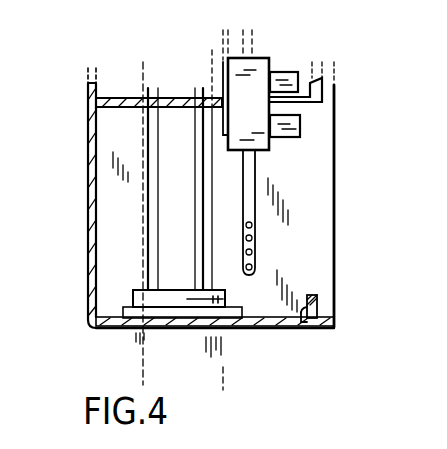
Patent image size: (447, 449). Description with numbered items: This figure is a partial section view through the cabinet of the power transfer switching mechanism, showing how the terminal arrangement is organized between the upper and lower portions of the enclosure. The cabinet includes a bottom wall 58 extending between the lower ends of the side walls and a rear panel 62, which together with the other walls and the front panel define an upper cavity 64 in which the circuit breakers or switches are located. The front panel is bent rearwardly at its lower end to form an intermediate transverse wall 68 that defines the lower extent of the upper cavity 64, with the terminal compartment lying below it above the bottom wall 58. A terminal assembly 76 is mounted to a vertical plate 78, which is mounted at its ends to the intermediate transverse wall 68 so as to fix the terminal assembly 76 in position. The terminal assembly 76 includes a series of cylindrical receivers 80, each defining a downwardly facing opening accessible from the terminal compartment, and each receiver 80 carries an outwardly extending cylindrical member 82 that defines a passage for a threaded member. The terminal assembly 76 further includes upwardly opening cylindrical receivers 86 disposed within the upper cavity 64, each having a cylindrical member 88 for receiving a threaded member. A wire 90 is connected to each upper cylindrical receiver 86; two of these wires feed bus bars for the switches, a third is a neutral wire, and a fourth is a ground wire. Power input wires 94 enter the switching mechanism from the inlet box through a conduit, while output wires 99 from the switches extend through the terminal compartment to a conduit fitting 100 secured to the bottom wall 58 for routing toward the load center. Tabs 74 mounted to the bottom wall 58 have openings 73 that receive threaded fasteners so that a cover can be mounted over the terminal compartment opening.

The bottom wall 58 is at (247, 329).
The rear panel 62 is at (88, 201).
The upper cavity 64 is at (115, 72).
The intermediate transverse wall 68 is at (113, 108).
The openings 73 is at (304, 322).
The tabs 74 is at (316, 302).
The terminal assembly 76 is at (279, 162).
The vertical plate 78 is at (222, 82).
The cylindrical receivers 80 is at (270, 140).
The cylindrical member 82 is at (300, 127).
The upwardly opening cylindrical receivers 86 is at (272, 71).
The cylindrical member 88 is at (306, 73).
The wire 90 is at (252, 45).
The power input wires 94 is at (253, 226).
The output wires 99 is at (149, 253).
The conduit fitting 100 is at (137, 337).